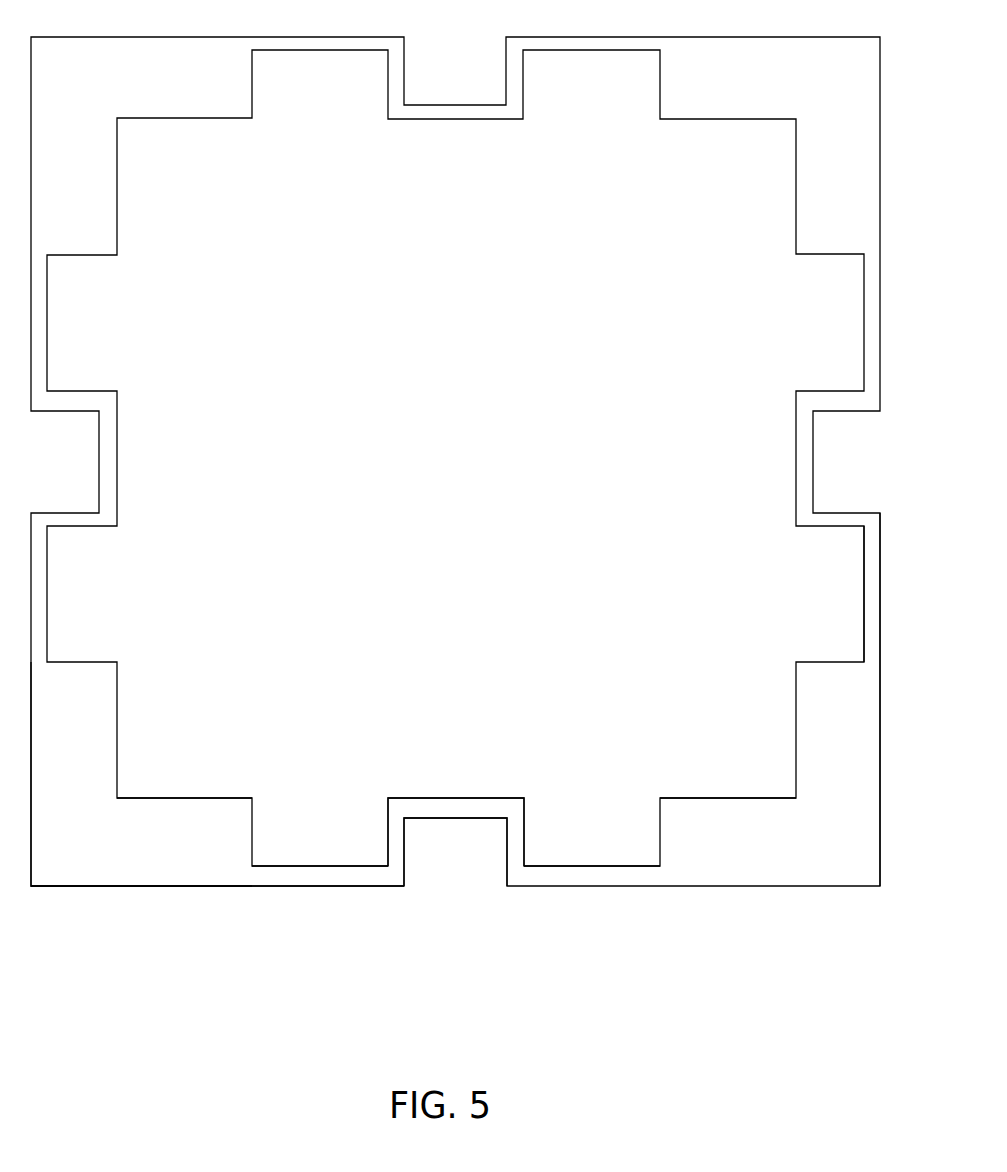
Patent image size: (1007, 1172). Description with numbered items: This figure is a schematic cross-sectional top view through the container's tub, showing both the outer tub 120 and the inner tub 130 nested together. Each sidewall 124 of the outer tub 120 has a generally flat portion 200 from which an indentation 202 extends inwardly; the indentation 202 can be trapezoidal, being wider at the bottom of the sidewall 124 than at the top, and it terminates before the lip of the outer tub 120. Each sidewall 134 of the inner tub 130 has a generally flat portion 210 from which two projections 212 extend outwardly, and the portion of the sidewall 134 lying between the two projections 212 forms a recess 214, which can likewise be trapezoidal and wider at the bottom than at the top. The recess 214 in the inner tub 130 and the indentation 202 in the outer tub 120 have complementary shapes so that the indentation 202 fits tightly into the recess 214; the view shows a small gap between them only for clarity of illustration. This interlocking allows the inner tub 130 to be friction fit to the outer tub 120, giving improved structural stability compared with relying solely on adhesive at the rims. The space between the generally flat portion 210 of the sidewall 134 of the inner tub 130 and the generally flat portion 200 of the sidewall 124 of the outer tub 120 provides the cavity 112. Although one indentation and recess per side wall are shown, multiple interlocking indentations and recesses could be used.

The cavity 112 is at (151, 845).
The outer tub 120 is at (762, 904).
The sidewall 124 is at (882, 578).
The inner tub 130 is at (117, 645).
The sidewall 134 is at (863, 600).
The generally flat portion 200 is at (232, 887).
The indentation 202 is at (465, 818).
The generally flat portion 210 is at (200, 798).
The projections 212 is at (320, 866).
The recess 214 is at (438, 798).